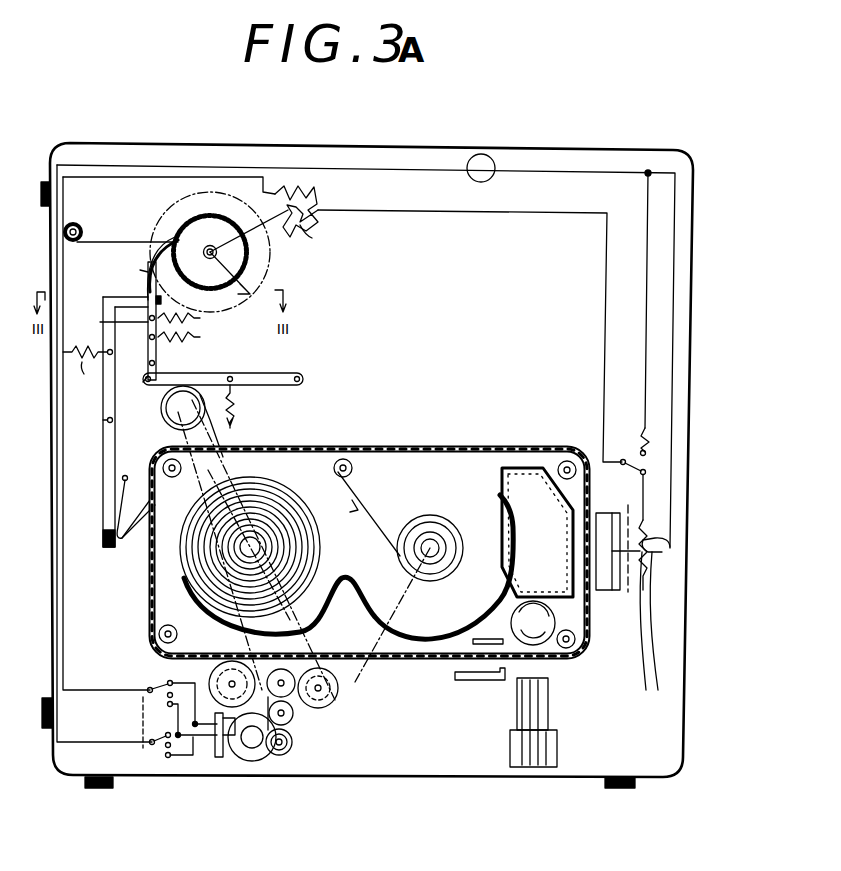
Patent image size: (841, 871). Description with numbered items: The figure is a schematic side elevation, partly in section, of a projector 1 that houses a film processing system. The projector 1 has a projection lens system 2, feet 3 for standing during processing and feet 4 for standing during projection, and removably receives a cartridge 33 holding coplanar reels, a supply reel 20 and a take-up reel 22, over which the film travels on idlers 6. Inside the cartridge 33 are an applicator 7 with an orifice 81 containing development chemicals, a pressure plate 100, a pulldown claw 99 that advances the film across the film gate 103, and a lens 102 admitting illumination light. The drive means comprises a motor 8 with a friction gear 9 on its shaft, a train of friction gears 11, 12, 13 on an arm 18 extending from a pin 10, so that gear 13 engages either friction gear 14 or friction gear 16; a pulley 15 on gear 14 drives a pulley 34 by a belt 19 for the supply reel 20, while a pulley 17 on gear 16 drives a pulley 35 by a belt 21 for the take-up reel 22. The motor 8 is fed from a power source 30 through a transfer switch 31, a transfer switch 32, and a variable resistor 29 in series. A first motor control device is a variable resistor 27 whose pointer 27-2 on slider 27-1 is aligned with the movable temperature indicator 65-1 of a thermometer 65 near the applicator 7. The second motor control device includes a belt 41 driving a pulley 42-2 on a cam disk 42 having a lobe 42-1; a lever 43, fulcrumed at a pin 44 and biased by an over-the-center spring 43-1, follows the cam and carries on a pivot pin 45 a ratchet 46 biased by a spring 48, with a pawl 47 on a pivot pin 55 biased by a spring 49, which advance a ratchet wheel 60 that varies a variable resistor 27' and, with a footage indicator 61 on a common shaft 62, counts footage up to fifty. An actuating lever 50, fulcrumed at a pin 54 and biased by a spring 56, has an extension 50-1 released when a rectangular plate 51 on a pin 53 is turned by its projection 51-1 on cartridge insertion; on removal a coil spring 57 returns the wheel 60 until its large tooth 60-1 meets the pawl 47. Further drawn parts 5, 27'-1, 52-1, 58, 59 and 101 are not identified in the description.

The projector 1 is at (597, 765).
The projection lens system 2 is at (533, 768).
The feet 3 is at (100, 788).
The feet 4 is at (42, 712).
The tape 5 is at (362, 500).
The idlers 6 is at (348, 458).
The applicator 7 is at (520, 516).
The motor 8 is at (240, 760).
The friction gear 9 is at (252, 750).
The pin 10 is at (285, 757).
The friction gear 11 is at (270, 760).
The friction gear 12 is at (292, 716).
The friction gear 13 is at (290, 696).
The friction gear 14 is at (328, 698).
The pulley 15 is at (336, 692).
The friction gear 16 is at (215, 680).
The pulley 17 is at (225, 715).
The arm 18 is at (290, 746).
The belt 19 is at (362, 678).
The supply reel 20 is at (430, 530).
The belt 21 is at (315, 576).
The take-up reel 22 is at (290, 520).
The variable resistor 27 is at (663, 614).
The variable resistor 27' is at (316, 205).
The spring end 27'-1 is at (340, 227).
The slider 27-1 is at (653, 620).
The pointer 27-2 is at (664, 630).
The variable resistor 29 is at (642, 395).
The power source 30 is at (481, 154).
The transfer switch 31 is at (143, 712).
The transfer switch 32 is at (630, 430).
The cartridge 33 is at (412, 658).
The pulley 34 is at (440, 532).
The pulley 35 is at (272, 548).
The belt 41 is at (270, 480).
The cam disk 42 is at (161, 408).
The lobe 42-1 is at (237, 403).
The pulley 42-2 is at (218, 434).
The lever 43 is at (232, 375).
The over-the-center spring 43-1 is at (275, 373).
The pin 44 is at (303, 378).
The pivot pin 45 is at (146, 378).
The ratchet 46 is at (148, 355).
The pawl 47 is at (107, 322).
The spring 48 is at (205, 340).
The spring 49 is at (205, 322).
The lever 50 is at (103, 297).
The extension 50-1 is at (148, 275).
The rectangular plate 51 is at (130, 498).
The projection 51-1 is at (130, 540).
The slide end 52-1 is at (110, 545).
The pin 53 is at (126, 474).
The pin 54 is at (103, 420).
The pivot pin 55 is at (157, 364).
The spring 56 is at (88, 372).
The coil spring 57 is at (108, 260).
The pivot 58 is at (78, 220).
The shaft 59 is at (245, 262).
The ratchet wheel 60 is at (200, 140).
The large tooth 60-1 is at (165, 235).
The footage indicator 61 is at (222, 236).
The common shaft 62 is at (297, 228).
The thermometer 65 is at (603, 590).
The movable temperature indicator 65-1 is at (612, 590).
The orifice 81 is at (596, 590).
The pulldown claw 99 is at (462, 676).
The pressure plate 100 is at (492, 636).
The bracket 101 is at (494, 680).
The lens 102 is at (548, 690).
The film gate 103 is at (545, 680).